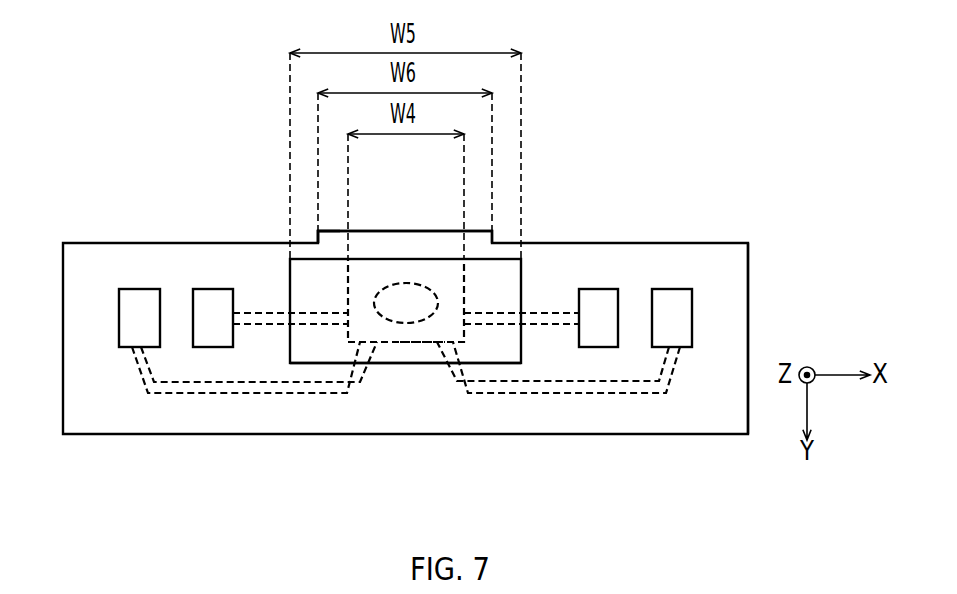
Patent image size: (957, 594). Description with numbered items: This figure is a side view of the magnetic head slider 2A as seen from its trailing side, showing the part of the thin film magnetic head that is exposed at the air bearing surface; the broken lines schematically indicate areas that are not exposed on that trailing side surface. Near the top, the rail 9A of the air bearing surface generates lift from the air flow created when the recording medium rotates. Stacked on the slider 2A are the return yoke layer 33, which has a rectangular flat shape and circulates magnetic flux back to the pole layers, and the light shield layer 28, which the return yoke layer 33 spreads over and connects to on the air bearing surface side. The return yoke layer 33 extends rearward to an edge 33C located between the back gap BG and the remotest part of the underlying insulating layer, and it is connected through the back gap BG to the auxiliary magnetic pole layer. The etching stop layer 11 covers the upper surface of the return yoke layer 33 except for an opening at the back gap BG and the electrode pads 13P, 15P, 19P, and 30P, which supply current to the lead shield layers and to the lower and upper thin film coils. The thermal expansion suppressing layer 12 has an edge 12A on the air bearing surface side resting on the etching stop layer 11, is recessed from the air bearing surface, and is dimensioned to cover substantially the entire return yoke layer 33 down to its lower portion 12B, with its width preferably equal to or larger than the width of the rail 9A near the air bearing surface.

The magnetic head slider 2A is at (733, 168).
The etching stop layer 11 is at (292, 410).
The thermal expansion suppressing layer 12 is at (500, 267).
The edge 12A is at (480, 258).
The lower portion of frame 12B is at (512, 365).
The electrode pad 13P is at (597, 312).
The electrode pad 15P is at (672, 312).
The electrode pad 19P is at (139, 312).
The electrode pad 30P is at (214, 312).
The light shield layer 28 is at (362, 250).
The return yoke layer 33 is at (401, 250).
The edge 33C is at (422, 342).
The rail 9A is at (337, 230).
The back gap BG is at (406, 323).